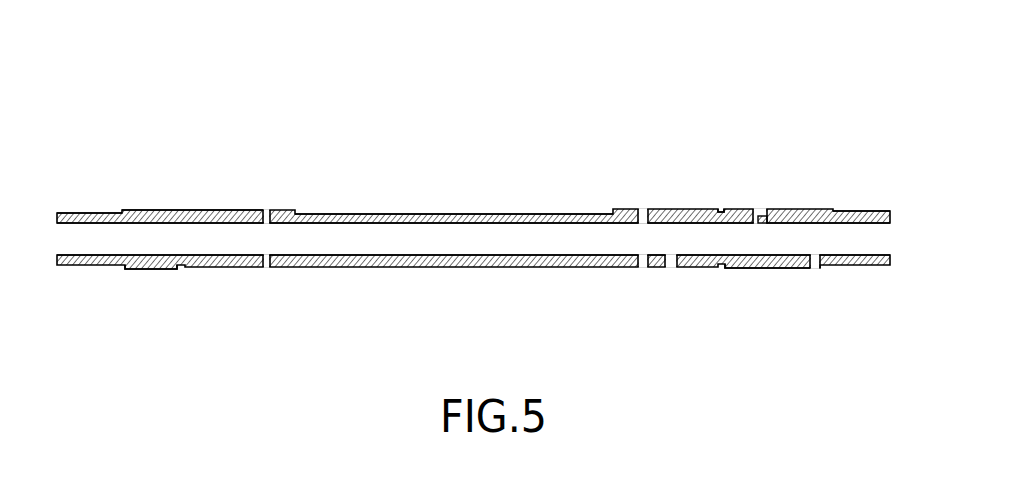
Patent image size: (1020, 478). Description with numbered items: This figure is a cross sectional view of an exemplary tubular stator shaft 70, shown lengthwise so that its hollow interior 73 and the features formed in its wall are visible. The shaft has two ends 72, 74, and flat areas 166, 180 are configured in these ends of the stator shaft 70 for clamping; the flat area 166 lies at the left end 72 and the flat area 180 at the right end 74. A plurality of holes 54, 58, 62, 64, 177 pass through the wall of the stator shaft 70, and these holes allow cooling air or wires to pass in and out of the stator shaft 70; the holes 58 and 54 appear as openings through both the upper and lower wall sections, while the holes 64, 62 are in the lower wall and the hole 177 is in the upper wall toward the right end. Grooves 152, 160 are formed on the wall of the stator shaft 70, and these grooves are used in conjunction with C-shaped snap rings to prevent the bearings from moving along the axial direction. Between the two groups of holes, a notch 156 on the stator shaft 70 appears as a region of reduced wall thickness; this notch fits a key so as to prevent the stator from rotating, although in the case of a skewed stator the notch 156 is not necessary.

The tubular stator shaft 70 is at (483, 76).
The inner bore 73 is at (105, 243).
The flat area 166 is at (85, 210).
The groove 152 is at (173, 211).
The hole 58 is at (263, 268).
The notch 156 is at (363, 214).
The hole 54 is at (641, 258).
The hole 64 is at (672, 268).
The groove 160 is at (722, 210).
The hole 177 is at (765, 210).
The flat area 180 is at (859, 211).
The end of the stator shaft 72 is at (143, 270).
The end of the stator shaft 74 is at (773, 268).
The hole 62 is at (815, 268).